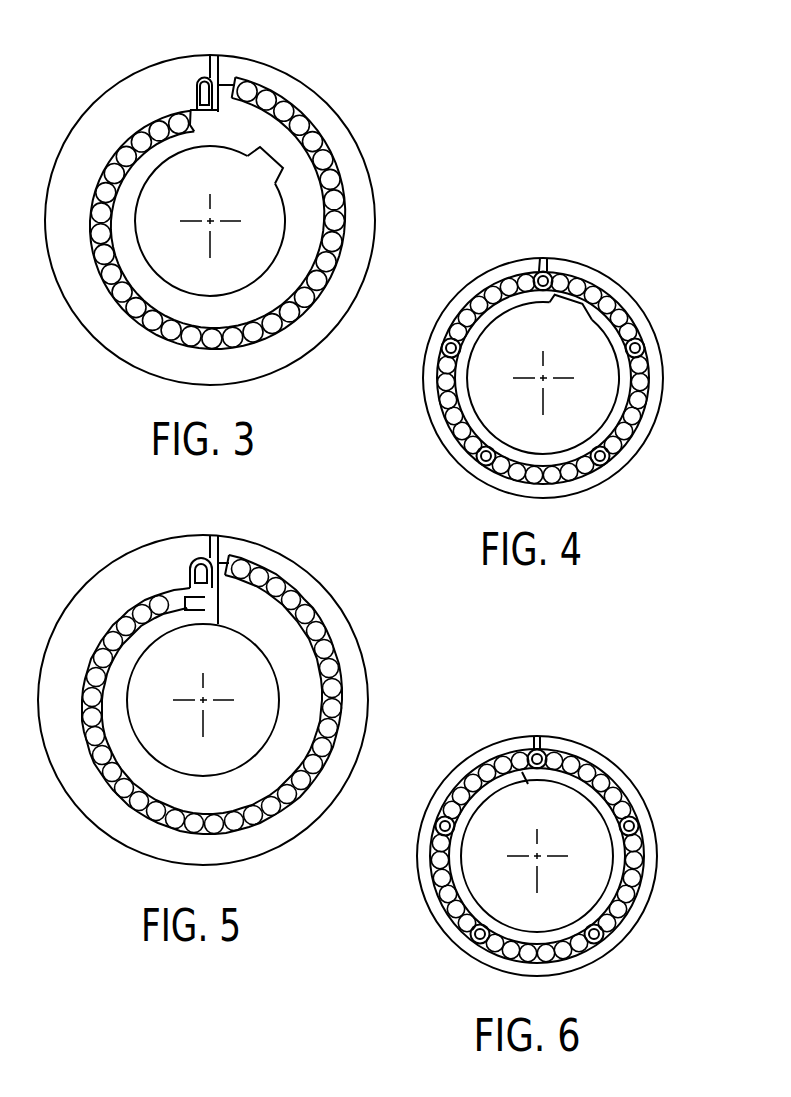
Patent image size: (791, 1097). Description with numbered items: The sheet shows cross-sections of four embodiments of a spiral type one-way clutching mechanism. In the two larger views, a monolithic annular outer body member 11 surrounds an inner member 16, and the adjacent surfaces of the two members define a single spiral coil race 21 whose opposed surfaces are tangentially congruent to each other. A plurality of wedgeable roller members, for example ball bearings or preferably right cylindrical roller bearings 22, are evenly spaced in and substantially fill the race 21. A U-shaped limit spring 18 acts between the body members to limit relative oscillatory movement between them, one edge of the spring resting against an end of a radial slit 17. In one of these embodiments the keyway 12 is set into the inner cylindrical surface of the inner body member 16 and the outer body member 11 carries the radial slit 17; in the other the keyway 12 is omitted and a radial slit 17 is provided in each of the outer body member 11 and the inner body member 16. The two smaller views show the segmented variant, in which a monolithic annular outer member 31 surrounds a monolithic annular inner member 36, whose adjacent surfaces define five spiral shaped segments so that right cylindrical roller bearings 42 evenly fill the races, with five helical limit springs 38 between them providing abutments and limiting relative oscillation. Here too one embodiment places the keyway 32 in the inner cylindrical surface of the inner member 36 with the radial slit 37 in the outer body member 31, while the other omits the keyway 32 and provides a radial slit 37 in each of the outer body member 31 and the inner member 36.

In FIG. 3, the monolithic annular outer body member 11 is at (355, 218).
In FIG. 5, the monolithic annular outer body member 11 is at (351, 700).
In FIG. 3, the keyway 12 is at (277, 155).
In FIG. 3, the inner member 16 is at (275, 293).
In FIG. 5, the inner member 16 is at (269, 773).
In FIG. 3, the radial slit 17 is at (217, 53).
In FIG. 5, the radial slit 17 is at (216, 531).
In FIG. 3, the U-shaped limit spring 18 is at (197, 88).
In FIG. 5, the U-shaped limit spring 18 is at (192, 569).
In FIG. 3, the spiral coil race 21 is at (303, 117).
In FIG. 3, the roller bearings 22 is at (120, 290).
In FIG. 5, the roller bearings 22 is at (110, 770).
In FIG. 4, the monolithic annular outer member 31 is at (627, 448).
In FIG. 6, the monolithic annular outer member 31 is at (622, 927).
In FIG. 4, the keyway 32 is at (570, 308).
In FIG. 4, the monolithic annular inner member 36 is at (622, 372).
In FIG. 6, the monolithic annular inner member 36 is at (618, 848).
In FIG. 4, the radial slit 37 is at (540, 270).
In FIG. 6, the radial slit 37 is at (537, 737).
In FIG. 4, the helical limit springs 38 is at (442, 347).
In FIG. 6, the helical limit springs 38 is at (436, 825).
In FIG. 4, the right cylindrical roller bearings 42 is at (447, 402).
In FIG. 6, the right cylindrical roller bearings 42 is at (440, 878).